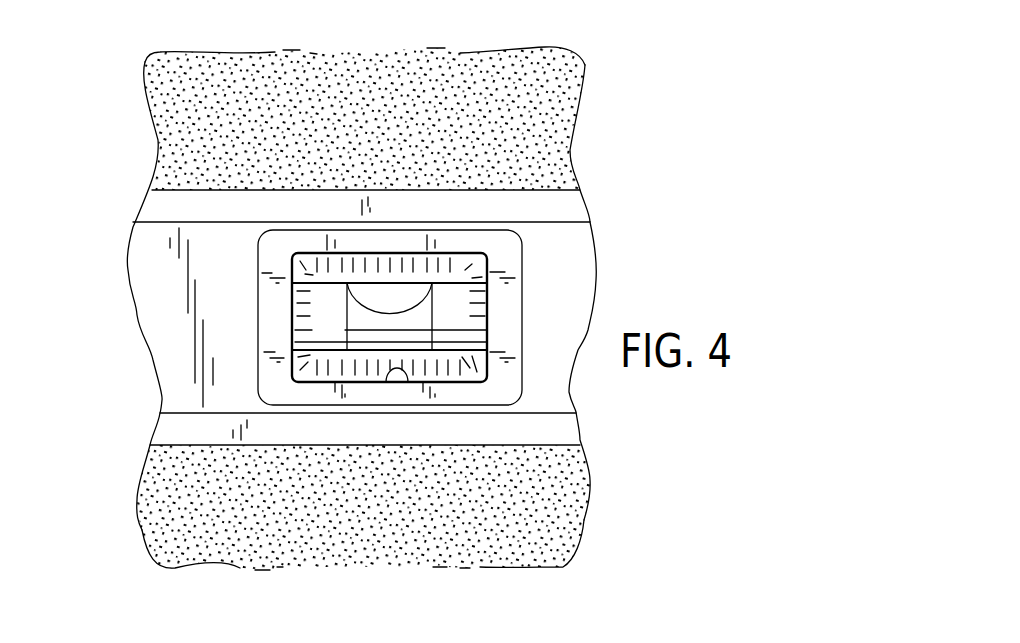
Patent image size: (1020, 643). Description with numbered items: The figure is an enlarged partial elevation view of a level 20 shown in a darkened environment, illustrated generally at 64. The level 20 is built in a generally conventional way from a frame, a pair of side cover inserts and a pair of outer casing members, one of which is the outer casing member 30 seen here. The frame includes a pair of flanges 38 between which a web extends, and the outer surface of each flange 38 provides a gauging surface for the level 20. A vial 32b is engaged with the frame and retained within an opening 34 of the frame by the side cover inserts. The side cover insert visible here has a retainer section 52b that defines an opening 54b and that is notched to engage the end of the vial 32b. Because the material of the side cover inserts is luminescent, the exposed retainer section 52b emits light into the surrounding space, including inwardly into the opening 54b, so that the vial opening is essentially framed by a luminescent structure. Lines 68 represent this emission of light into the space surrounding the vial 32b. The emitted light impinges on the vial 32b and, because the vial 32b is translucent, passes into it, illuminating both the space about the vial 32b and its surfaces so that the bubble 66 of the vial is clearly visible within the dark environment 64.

The level 20 is at (620, 215).
The outer casing member 30 is at (134, 313).
The opening 34 is at (490, 230).
The flange 38 is at (545, 197).
The vial 32b is at (448, 283).
The dark environment 64 is at (573, 517).
The bubble 66 is at (357, 300).
The lines 68 is at (468, 355).
The retainer section 52b is at (308, 395).
The opening 54b is at (407, 375).